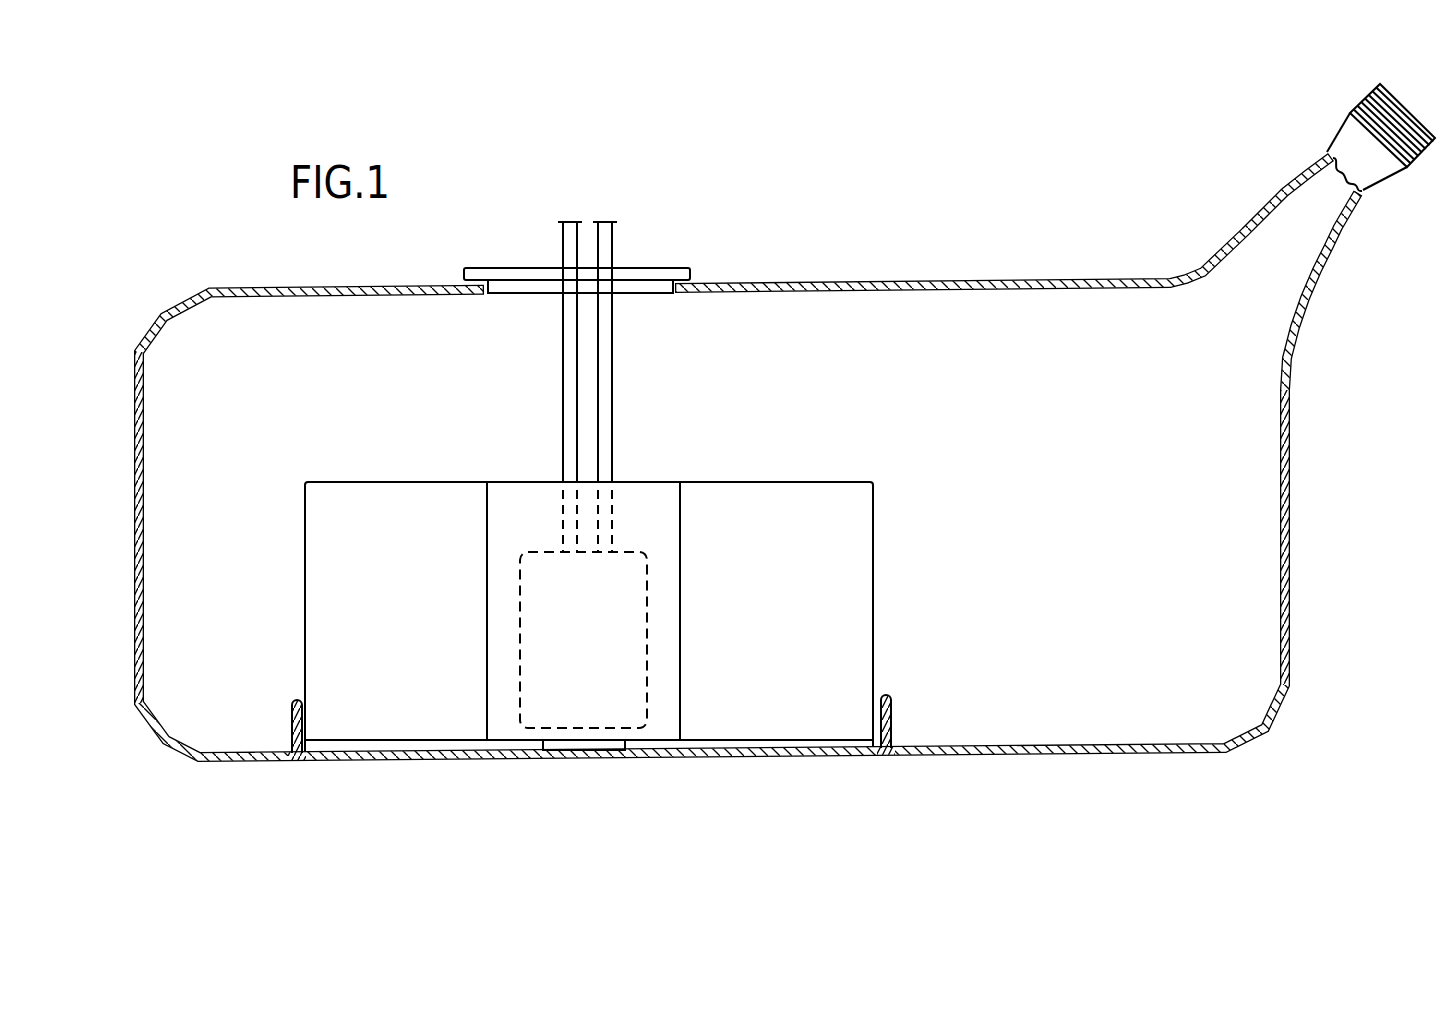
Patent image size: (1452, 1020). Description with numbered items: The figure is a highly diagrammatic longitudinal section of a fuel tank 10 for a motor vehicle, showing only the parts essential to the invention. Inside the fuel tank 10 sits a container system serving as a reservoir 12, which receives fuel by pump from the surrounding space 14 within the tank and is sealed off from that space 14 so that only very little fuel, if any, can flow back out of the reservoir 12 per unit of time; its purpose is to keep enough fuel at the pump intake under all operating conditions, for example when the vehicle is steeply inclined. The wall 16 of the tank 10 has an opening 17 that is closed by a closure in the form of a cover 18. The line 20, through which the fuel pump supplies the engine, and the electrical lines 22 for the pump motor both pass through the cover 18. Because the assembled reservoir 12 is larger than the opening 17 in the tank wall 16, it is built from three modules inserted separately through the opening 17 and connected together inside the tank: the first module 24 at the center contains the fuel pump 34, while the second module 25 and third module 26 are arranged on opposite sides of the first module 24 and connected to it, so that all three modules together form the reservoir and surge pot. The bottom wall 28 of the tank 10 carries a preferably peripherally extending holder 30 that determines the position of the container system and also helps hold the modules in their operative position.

The fuel tank 10 is at (890, 212).
The reservoir 12 is at (776, 393).
The space 14 is at (1068, 383).
The wall 16 is at (752, 288).
The opening 17 is at (666, 308).
The cover 18 is at (645, 273).
The line 20 is at (610, 240).
The electrical lines 22 is at (567, 348).
The first module 24 is at (638, 483).
The second module 25 is at (305, 530).
The third module 26 is at (875, 573).
The bottom wall 28 is at (970, 748).
The holder 30 is at (887, 708).
The fuel pump 34 is at (542, 713).